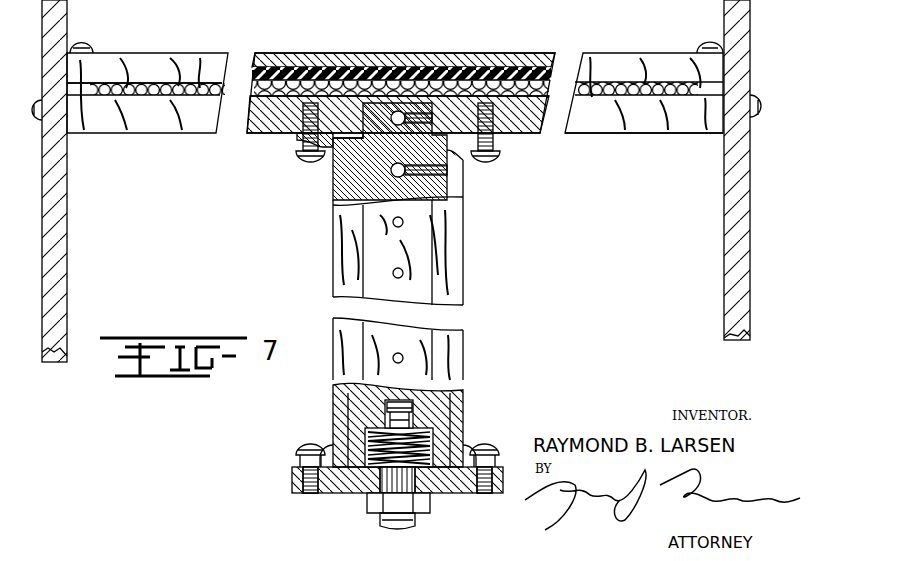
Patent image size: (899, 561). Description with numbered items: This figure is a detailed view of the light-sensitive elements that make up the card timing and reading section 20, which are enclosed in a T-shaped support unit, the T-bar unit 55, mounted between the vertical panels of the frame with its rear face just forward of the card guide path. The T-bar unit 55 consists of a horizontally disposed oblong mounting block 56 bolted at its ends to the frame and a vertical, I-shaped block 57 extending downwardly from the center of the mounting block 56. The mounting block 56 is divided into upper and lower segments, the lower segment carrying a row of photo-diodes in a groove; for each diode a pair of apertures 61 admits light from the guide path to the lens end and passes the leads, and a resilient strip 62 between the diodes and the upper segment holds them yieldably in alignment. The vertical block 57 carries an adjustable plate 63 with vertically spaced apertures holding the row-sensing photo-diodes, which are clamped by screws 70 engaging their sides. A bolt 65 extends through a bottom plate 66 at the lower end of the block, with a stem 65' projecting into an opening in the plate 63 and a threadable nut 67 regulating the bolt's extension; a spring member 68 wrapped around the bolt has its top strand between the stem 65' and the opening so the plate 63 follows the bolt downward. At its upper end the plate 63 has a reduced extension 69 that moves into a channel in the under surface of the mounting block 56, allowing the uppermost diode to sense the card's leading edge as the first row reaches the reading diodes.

The card timing and reading section 20 is at (300, 304).
The T-bar unit 55 is at (546, 251).
The horizontal mounting block 56 is at (409, 75).
The vertical mounting block 57 is at (463, 212).
The apertures 61 is at (145, 83).
The resilient strip 62 is at (280, 72).
The adjustable plate 63 is at (420, 293).
The bolt 65 is at (432, 526).
The stem 65' is at (342, 411).
The bottom plate 66 is at (292, 479).
The threadable nut 67 is at (367, 503).
The spring member 68 is at (430, 445).
The reduced extension 69 is at (377, 127).
The screws 70 is at (405, 170).